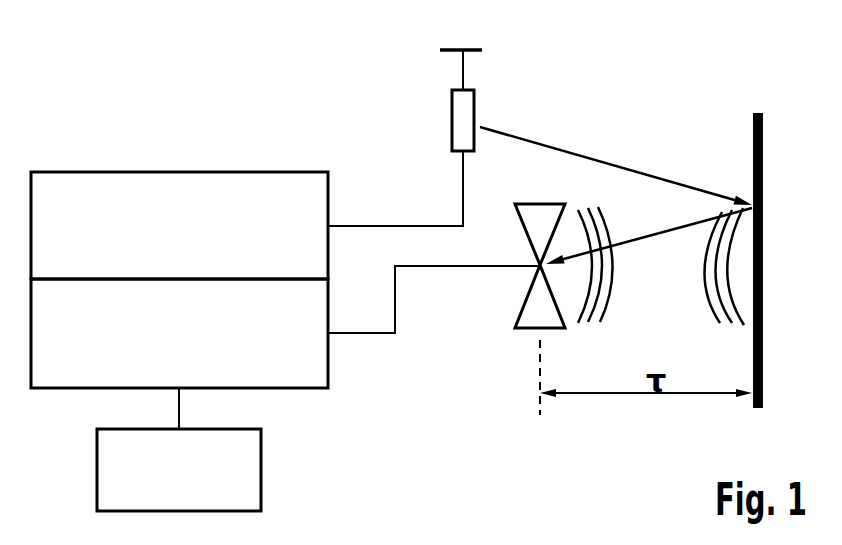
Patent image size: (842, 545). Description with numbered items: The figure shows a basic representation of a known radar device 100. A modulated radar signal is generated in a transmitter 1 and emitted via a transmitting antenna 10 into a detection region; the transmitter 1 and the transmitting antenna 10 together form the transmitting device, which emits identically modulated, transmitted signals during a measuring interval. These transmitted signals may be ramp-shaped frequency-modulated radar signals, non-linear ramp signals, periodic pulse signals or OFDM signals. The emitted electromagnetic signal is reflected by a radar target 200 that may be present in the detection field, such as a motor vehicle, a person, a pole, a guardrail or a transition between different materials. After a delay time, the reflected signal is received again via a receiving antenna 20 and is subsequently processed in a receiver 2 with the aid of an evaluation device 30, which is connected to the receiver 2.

The radar device 100 is at (112, 86).
The transmitter 1 is at (280, 182).
The receiver 2 is at (298, 382).
The evaluation device 30 is at (105, 469).
The transmitting antenna 10 is at (460, 118).
The receiving antenna 20 is at (530, 292).
The radar target 200 is at (753, 130).